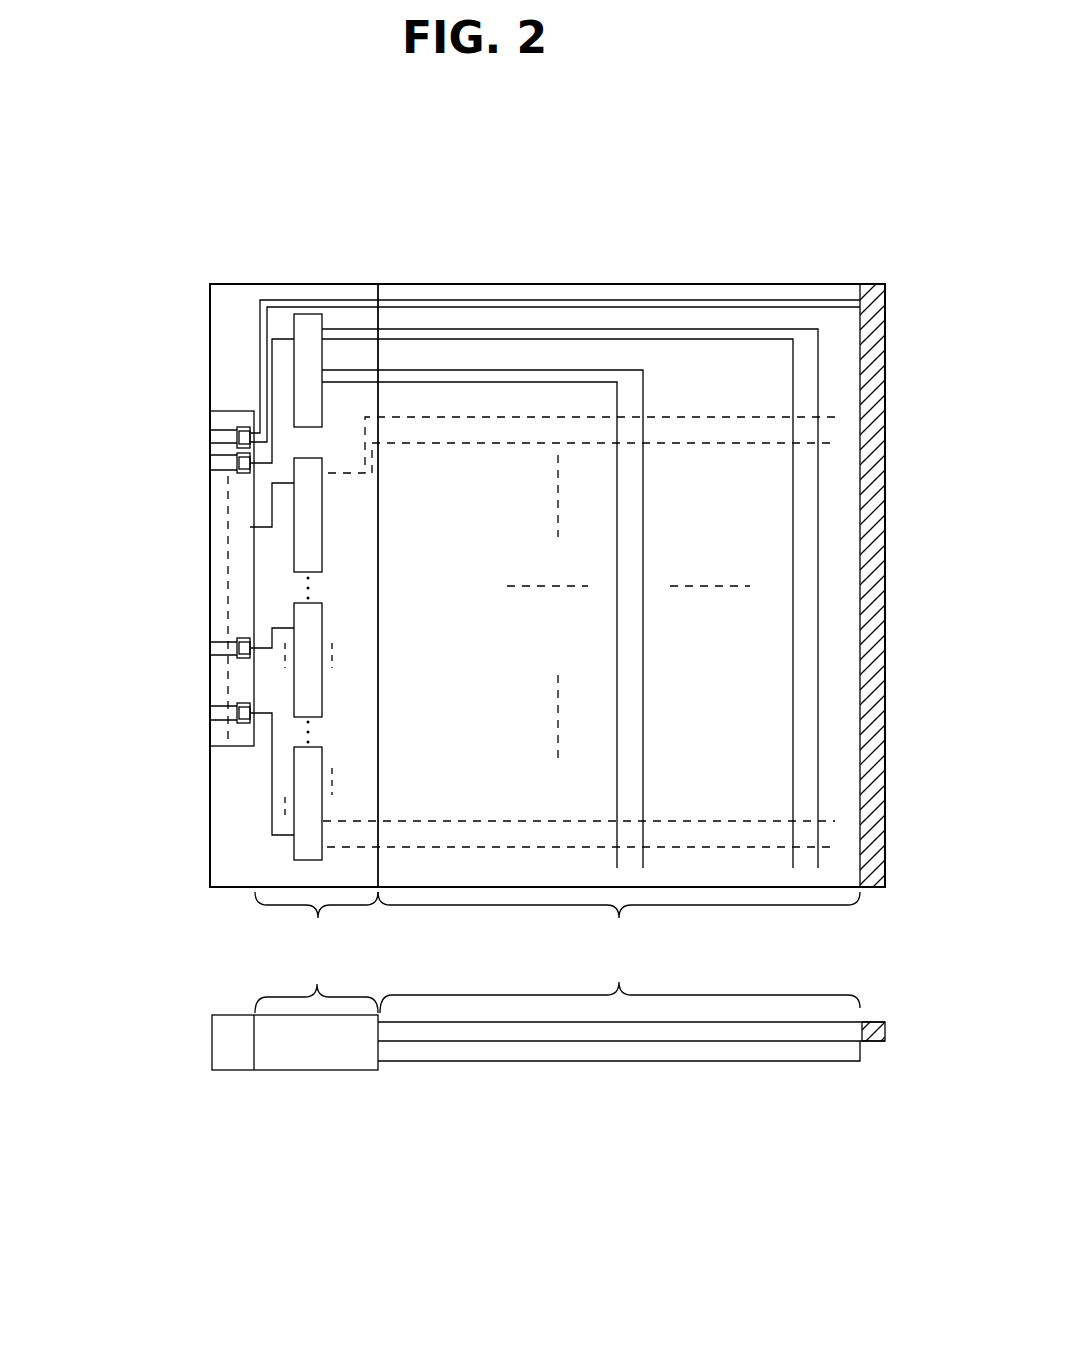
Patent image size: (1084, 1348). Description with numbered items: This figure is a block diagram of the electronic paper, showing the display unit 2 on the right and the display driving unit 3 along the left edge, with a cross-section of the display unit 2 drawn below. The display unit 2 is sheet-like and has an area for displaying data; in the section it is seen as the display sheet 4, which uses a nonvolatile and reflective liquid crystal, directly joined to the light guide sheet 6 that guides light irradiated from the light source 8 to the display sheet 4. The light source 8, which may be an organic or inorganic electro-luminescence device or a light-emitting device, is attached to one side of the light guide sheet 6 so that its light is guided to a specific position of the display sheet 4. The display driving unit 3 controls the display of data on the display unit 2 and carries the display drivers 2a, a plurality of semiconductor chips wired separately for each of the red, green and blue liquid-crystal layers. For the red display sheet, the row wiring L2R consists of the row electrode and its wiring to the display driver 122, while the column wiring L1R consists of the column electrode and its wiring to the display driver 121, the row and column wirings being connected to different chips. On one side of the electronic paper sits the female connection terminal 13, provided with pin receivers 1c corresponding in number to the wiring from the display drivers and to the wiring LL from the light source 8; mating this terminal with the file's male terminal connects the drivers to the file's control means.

The display driver 121 is at (308, 358).
The display driver 122 is at (303, 547).
The pin receiver 1c is at (215, 528).
The female connection terminal 13 is at (213, 683).
The display driver 2a is at (297, 795).
The display driving unit 3 is at (295, 981).
The display unit 2 is at (619, 952).
The display sheet 4 is at (396, 1055).
The light guide sheet 6 is at (632, 1034).
The light source 8 is at (873, 1042).
The wiring from the light source LL is at (408, 300).
The column wiring L1R is at (818, 357).
The row wiring L2R is at (703, 416).